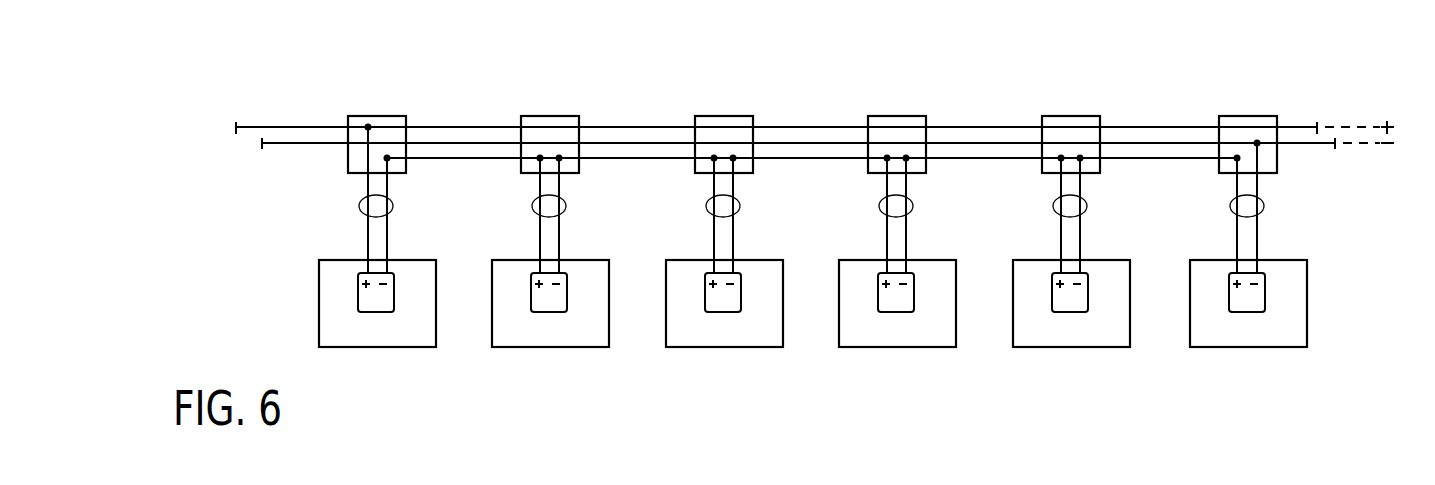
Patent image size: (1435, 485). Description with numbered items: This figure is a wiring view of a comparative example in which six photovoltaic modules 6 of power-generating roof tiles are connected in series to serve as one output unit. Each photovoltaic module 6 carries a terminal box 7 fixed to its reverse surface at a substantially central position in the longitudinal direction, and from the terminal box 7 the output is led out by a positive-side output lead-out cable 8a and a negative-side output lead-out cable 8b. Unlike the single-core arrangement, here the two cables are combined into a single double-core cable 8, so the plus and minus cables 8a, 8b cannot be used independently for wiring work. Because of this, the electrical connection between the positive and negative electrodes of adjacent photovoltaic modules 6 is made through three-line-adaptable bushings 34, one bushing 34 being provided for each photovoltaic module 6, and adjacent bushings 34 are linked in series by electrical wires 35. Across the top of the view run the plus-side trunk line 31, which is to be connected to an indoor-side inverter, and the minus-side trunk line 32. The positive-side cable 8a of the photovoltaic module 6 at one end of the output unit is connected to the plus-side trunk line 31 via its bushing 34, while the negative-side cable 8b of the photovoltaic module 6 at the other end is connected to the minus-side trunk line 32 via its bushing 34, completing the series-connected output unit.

The photovoltaic module 6 is at (380, 347).
The terminal box 7 is at (394, 291).
The double-core cable 8 is at (295, 185).
The positive-side output lead-out cable 8a is at (362, 190).
The negative-side output lead-out cable 8b is at (372, 237).
The plus-side trunk line 31 is at (622, 127).
The minus-side trunk line 32 is at (977, 143).
The three-line-adaptable bushing 34 is at (384, 116).
The electrical wire 35 is at (455, 157).